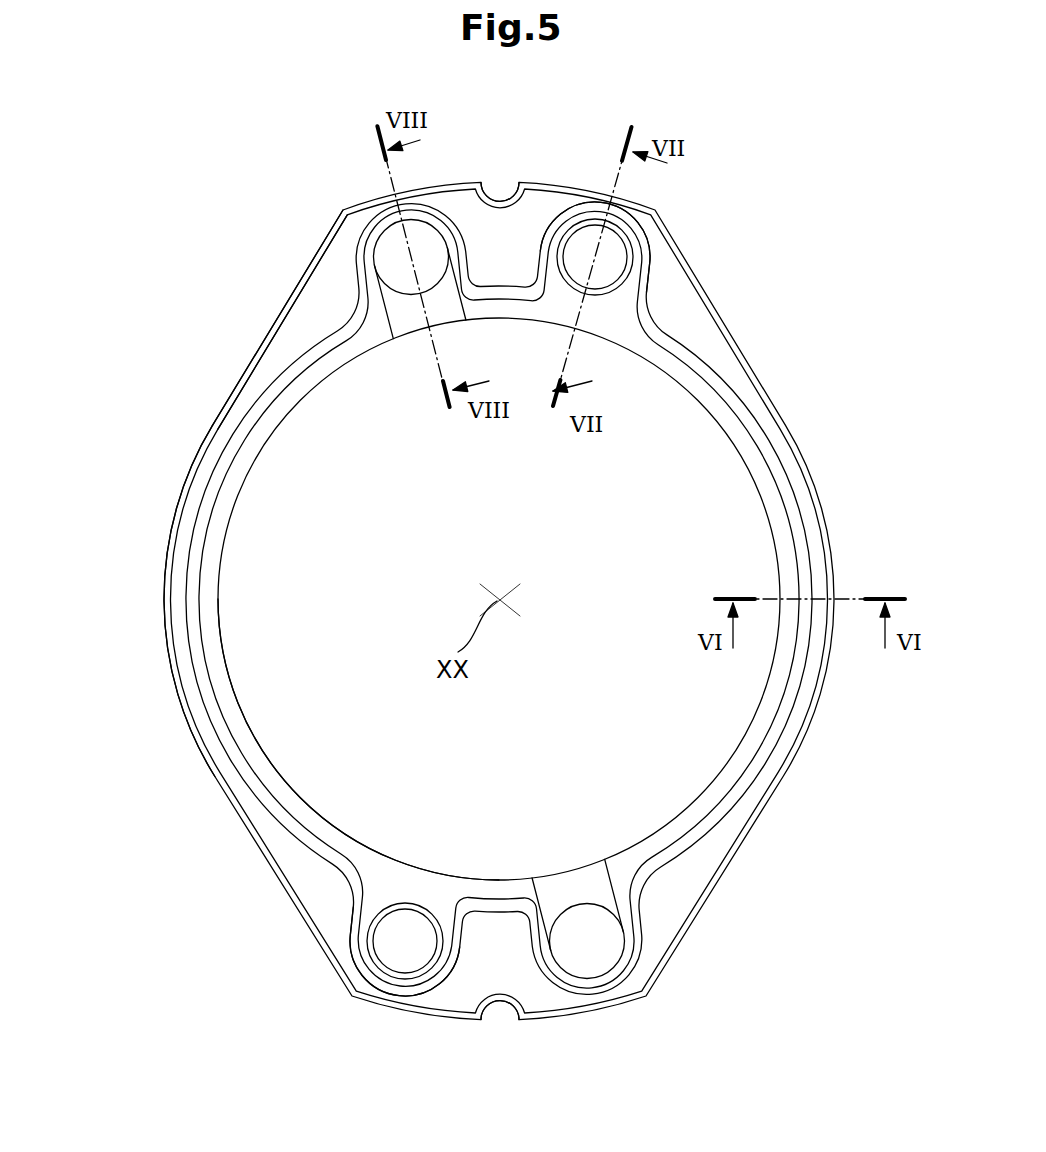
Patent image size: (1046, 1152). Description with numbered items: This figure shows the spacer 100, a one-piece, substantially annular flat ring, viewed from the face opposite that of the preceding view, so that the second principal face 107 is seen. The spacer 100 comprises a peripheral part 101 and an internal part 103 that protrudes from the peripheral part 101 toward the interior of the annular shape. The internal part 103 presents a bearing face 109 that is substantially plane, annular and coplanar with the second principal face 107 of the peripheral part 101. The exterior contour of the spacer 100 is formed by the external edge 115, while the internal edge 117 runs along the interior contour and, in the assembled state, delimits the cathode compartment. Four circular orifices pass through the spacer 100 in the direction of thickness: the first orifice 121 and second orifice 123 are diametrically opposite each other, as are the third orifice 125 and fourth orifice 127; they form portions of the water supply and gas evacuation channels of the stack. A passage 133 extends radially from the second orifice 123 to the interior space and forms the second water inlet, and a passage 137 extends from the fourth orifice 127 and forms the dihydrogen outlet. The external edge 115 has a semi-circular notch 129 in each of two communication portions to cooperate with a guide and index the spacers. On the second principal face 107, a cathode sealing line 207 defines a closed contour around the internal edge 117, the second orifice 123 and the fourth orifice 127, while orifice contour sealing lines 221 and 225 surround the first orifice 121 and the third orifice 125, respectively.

The spacer 100 is at (237, 223).
The peripheral part 101 is at (190, 473).
The internal part 103 is at (234, 498).
The second principal face 107 is at (275, 363).
The bearing face 109 is at (265, 432).
The external edge 115 is at (176, 525).
The internal edge 117 is at (222, 655).
The first orifice 121 is at (397, 957).
The second orifice 123 is at (591, 957).
The third orifice 125 is at (648, 228).
The fourth orifice 127 is at (393, 247).
The notch 129 is at (503, 180).
The passage 133 is at (576, 885).
The passage 137 is at (408, 322).
The cathode sealing line 207 is at (720, 383).
The orifice contour sealing line 221 is at (356, 935).
The orifice contour sealing line 225 is at (648, 283).